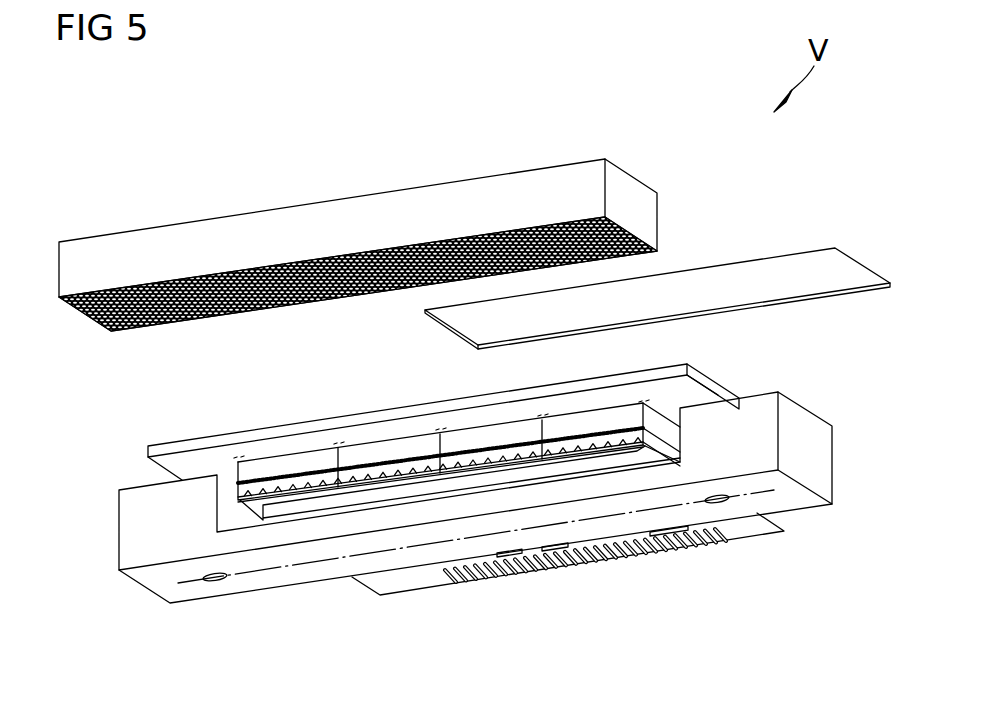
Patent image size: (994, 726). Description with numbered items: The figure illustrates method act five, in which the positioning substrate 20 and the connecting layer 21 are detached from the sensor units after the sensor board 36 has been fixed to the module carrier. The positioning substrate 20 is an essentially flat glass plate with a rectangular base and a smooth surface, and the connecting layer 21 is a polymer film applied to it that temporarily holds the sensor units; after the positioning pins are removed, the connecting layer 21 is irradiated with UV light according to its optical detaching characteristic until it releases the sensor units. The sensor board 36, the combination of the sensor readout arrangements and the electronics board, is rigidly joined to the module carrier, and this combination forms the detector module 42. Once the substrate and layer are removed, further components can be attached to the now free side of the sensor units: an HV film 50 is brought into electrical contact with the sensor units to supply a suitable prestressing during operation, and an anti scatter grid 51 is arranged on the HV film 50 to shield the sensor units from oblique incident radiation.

The positioning substrate 20 is at (165, 446).
The connecting layer 21 is at (212, 458).
The sensor board 36 is at (358, 450).
The detector module 42 is at (803, 400).
The HV film 50 is at (718, 262).
The anti scatter grid 51 is at (328, 198).